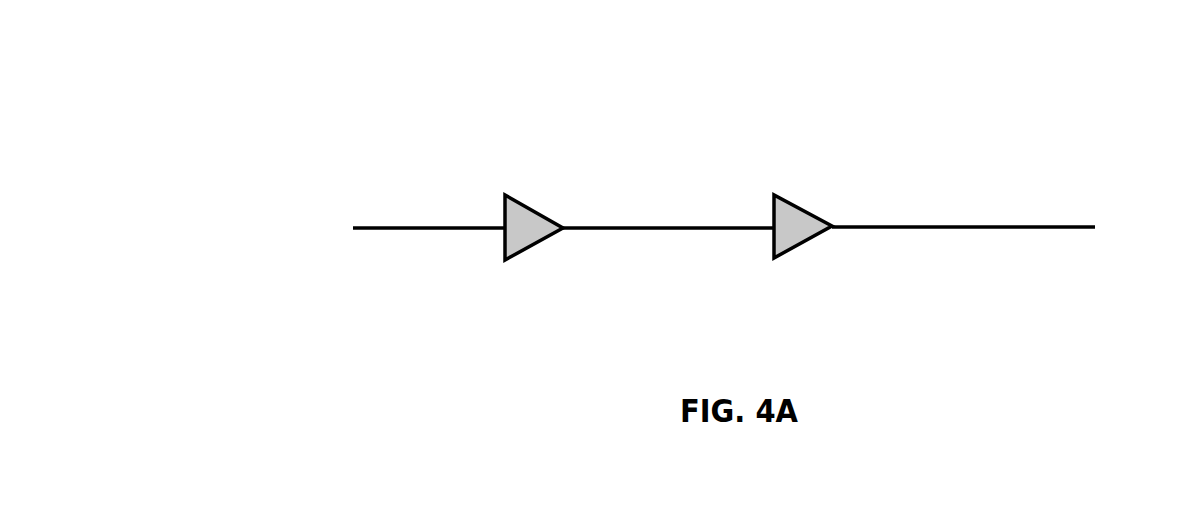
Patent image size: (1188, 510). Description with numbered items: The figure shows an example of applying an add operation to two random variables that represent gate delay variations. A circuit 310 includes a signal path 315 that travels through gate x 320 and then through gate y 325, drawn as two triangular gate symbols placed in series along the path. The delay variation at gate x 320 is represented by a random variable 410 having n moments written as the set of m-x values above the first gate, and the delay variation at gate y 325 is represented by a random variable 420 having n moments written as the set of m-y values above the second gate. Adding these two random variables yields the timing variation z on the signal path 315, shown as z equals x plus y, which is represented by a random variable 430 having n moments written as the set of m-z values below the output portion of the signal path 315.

The circuit 310 is at (338, 89).
The signal path 315 is at (1085, 229).
The gate x 320 is at (538, 243).
The gate y 325 is at (783, 258).
The random variable 410 is at (483, 143).
The random variable 420 is at (762, 142).
The random variable 430 is at (942, 285).